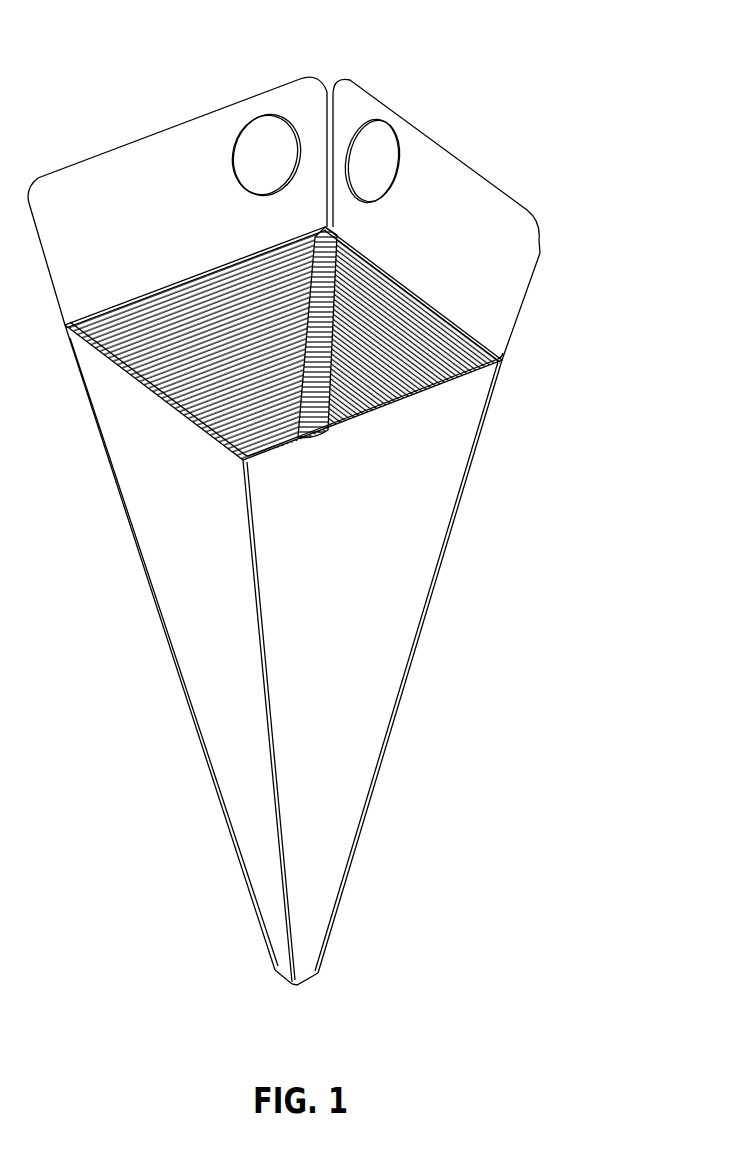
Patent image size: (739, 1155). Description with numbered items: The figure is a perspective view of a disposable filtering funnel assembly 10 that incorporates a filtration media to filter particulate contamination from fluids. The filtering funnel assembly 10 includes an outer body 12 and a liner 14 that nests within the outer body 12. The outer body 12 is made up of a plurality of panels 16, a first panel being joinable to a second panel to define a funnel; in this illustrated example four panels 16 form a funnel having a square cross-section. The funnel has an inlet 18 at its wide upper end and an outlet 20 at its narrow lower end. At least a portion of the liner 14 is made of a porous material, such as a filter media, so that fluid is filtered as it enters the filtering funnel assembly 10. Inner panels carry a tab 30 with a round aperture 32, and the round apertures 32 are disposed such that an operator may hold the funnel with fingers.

The filtering funnel assembly 10 is at (550, 85).
The outer body 12 is at (192, 552).
The liner 14 is at (410, 333).
The panels 16 is at (340, 597).
The inlet 18 is at (161, 160).
The outlet 20 is at (326, 1003).
The tab 30 is at (465, 213).
The round aperture 32 is at (371, 147).